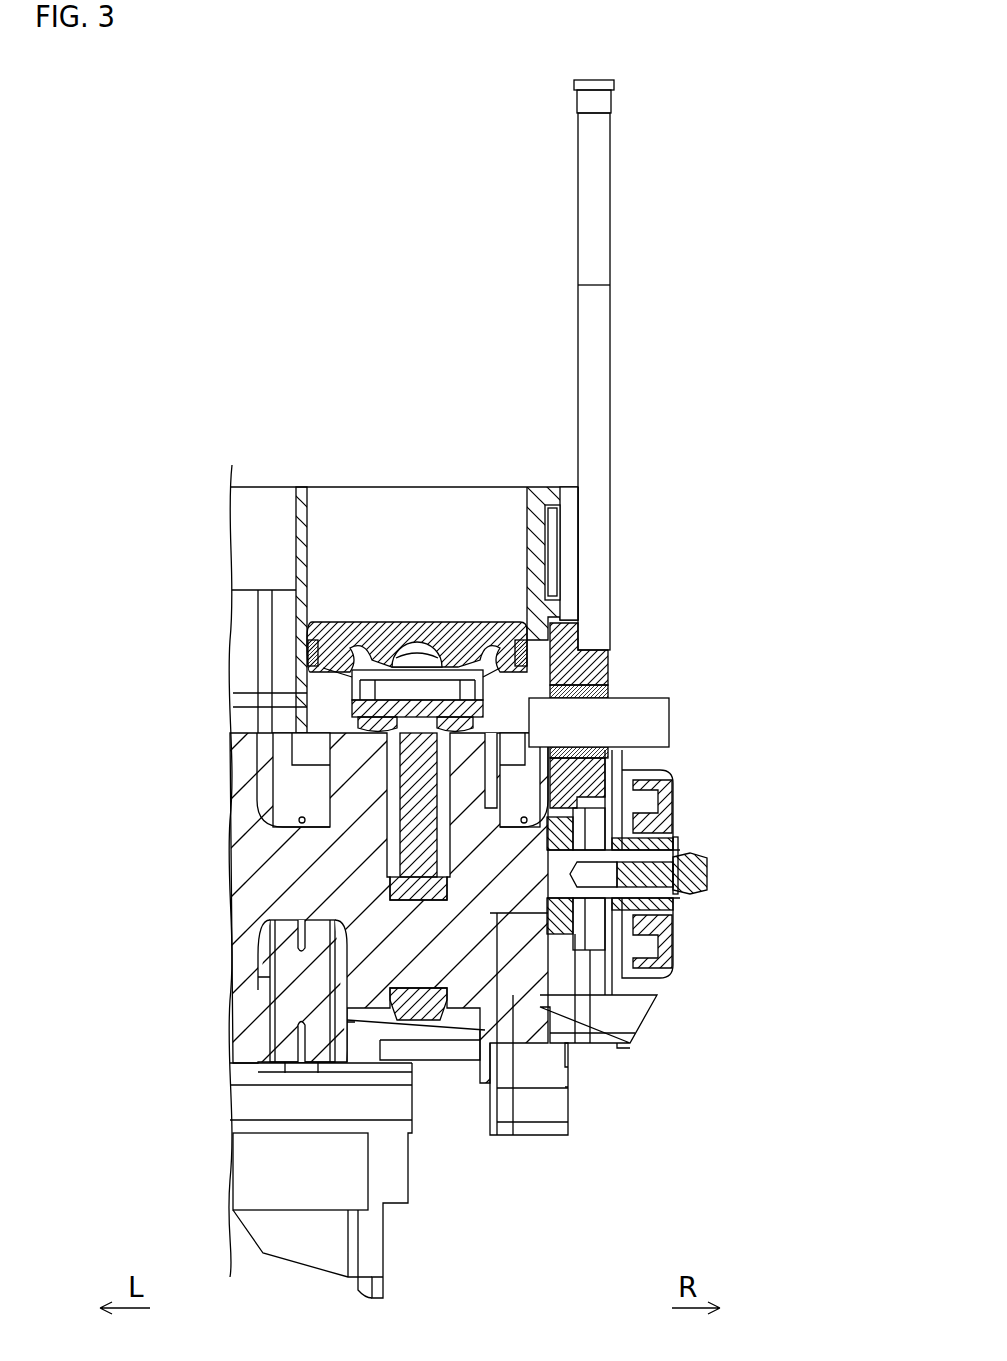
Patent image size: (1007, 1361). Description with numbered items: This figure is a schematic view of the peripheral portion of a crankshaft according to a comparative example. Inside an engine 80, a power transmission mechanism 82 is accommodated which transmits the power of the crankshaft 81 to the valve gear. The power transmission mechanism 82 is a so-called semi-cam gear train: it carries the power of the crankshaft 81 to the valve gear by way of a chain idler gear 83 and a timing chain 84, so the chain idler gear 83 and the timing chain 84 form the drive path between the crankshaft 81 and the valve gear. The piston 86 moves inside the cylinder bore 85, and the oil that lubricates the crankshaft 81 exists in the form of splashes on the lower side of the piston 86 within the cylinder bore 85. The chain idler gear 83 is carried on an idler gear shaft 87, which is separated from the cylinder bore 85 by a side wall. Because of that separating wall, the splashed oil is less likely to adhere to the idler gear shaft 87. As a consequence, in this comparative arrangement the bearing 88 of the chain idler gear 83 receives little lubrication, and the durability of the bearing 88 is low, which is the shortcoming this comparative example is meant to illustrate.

The engine 80 is at (483, 689).
The crankshaft 81 is at (337, 850).
The power transmission mechanism 82 is at (682, 622).
The chain idler gear 83 is at (598, 652).
The timing chain 84 is at (595, 412).
The cylinder bore 85 is at (304, 516).
The piston 86 is at (397, 632).
The idler gear shaft 87 is at (652, 722).
The bearing 88 is at (608, 680).